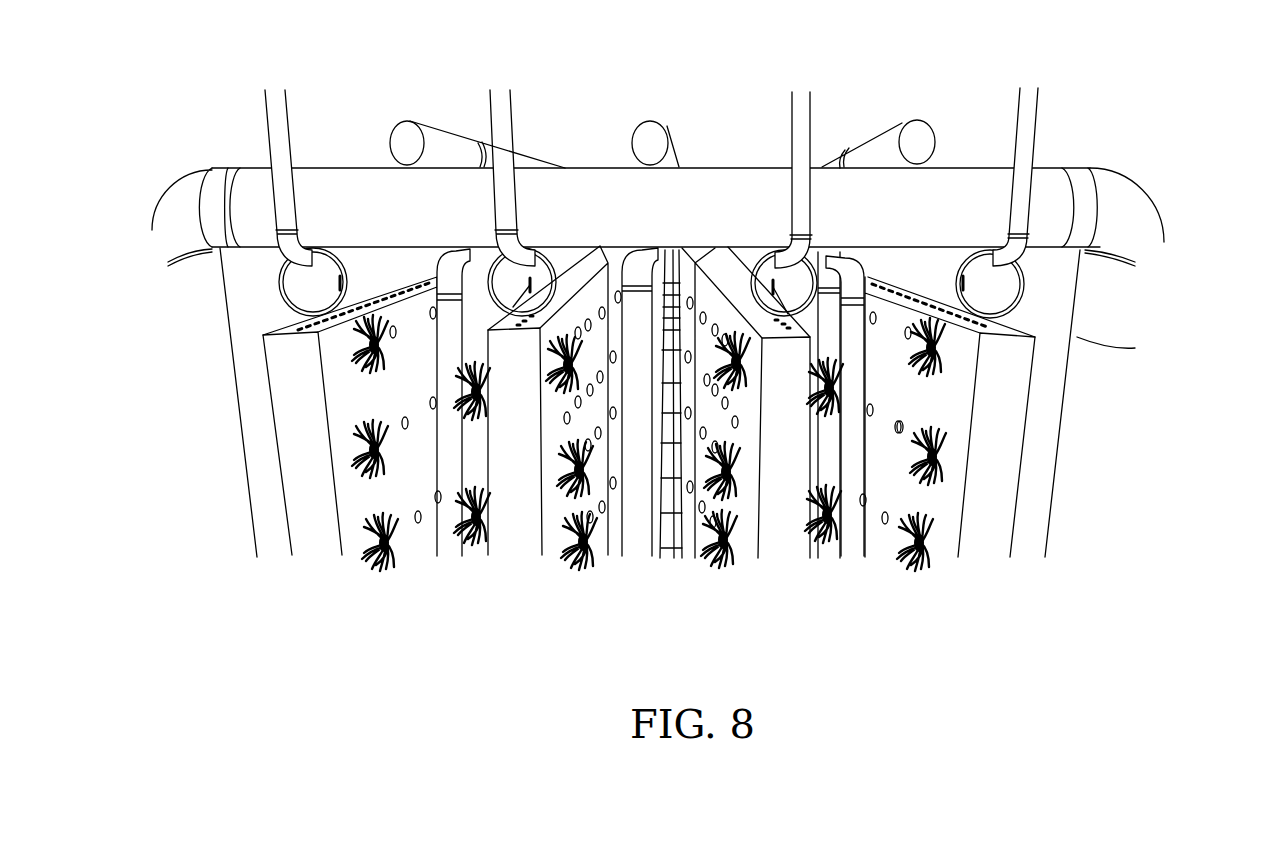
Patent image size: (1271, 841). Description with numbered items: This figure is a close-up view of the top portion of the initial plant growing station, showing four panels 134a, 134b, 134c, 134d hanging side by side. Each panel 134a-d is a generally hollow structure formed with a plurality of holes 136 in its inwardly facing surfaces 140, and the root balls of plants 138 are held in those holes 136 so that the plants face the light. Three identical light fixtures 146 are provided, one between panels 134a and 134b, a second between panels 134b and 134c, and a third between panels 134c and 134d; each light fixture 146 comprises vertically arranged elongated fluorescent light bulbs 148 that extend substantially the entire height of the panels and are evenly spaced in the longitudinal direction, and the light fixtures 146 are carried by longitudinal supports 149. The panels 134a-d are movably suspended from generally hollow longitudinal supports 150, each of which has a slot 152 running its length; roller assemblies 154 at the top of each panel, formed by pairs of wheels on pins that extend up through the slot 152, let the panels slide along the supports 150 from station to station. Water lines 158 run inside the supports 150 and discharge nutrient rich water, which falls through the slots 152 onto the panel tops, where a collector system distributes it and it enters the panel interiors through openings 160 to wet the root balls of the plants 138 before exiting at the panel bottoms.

The panel 134a is at (305, 546).
The panel 134b is at (520, 547).
The panel 134c is at (787, 548).
The panel 134d is at (985, 549).
The holes 136 is at (872, 404).
The plants 138 is at (957, 354).
The inwardly facing surfaces 140 is at (357, 544).
The light fixture 146 is at (455, 258).
The fluorescent light bulbs 148 is at (843, 552).
The longitudinal supports 149 is at (409, 121).
The longitudinal supports 150 is at (566, 262).
The slot 152 is at (530, 282).
The roller assemblies 154 is at (560, 238).
The water lines 158 is at (533, 288).
The openings 160 is at (1175, 320).